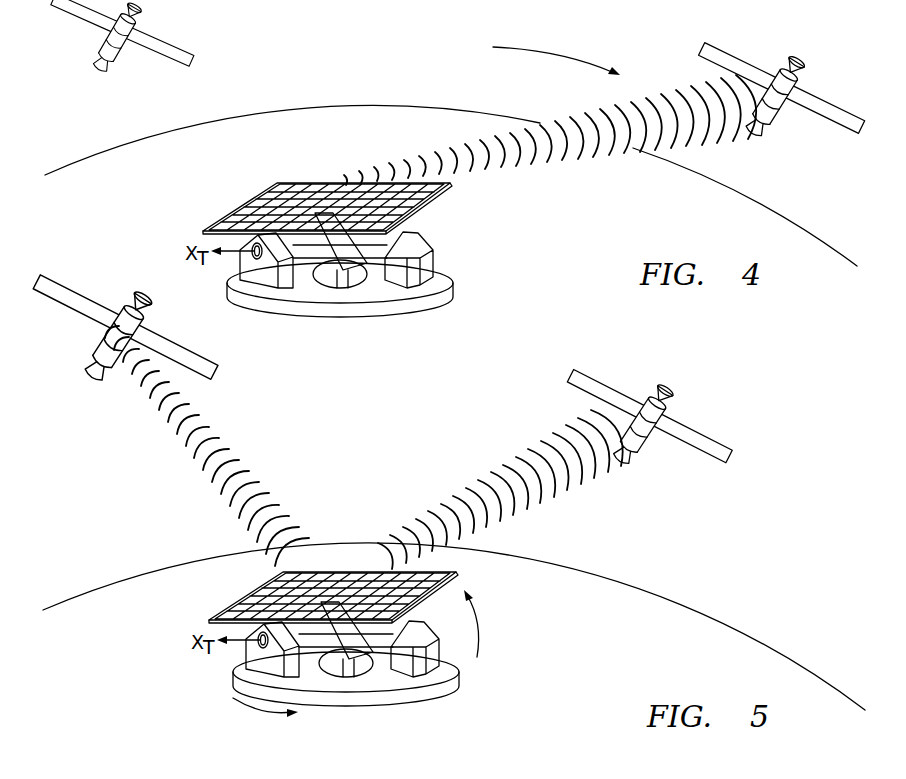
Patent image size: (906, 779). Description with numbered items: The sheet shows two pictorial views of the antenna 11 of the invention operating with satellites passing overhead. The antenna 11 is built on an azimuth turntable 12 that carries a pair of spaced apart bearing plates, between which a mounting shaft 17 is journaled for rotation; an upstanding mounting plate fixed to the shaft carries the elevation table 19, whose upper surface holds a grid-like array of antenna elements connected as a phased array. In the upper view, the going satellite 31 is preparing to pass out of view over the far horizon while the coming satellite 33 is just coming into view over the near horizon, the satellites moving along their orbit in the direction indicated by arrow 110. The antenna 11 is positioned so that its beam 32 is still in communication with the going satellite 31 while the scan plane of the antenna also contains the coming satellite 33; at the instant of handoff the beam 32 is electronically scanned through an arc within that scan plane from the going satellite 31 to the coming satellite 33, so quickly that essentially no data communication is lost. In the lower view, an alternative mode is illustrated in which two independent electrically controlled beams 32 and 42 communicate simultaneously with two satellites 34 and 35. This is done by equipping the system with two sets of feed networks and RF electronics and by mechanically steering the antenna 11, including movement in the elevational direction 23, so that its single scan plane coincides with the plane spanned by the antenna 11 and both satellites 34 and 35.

In FIG. 4, the antenna 11 is at (470, 263).
In FIG. 5, the antenna 11 is at (488, 662).
In FIG. 4, the azimuth turntable 12 is at (437, 297).
In FIG. 5, the azimuth turntable 12 is at (441, 688).
In FIG. 4, the mounting shaft 17 is at (364, 255).
In FIG. 5, the mounting shaft 17 is at (370, 644).
In FIG. 4, the elevation table 19 is at (294, 185).
In FIG. 5, the elevation table 19 is at (458, 574).
In FIG. 5, the elevational direction 23 is at (478, 621).
In FIG. 4, the going satellite 31 is at (138, 10).
In FIG. 4, the beam 32 is at (583, 157).
In FIG. 5, the beam 32 is at (248, 468).
In FIG. 4, the coming satellite 33 is at (796, 62).
In FIG. 5, the satellite 34 is at (144, 300).
In FIG. 5, the satellite 35 is at (665, 390).
In FIG. 5, the beam 42 is at (481, 476).
In FIG. 4, the satellite orbit direction 110 is at (548, 53).